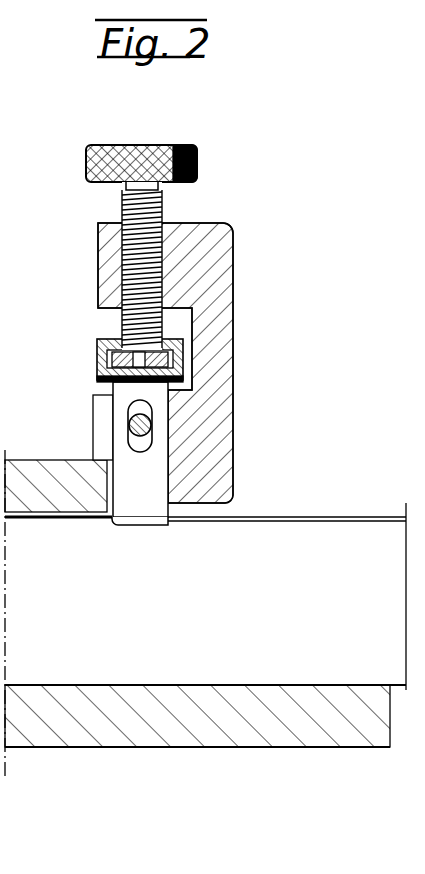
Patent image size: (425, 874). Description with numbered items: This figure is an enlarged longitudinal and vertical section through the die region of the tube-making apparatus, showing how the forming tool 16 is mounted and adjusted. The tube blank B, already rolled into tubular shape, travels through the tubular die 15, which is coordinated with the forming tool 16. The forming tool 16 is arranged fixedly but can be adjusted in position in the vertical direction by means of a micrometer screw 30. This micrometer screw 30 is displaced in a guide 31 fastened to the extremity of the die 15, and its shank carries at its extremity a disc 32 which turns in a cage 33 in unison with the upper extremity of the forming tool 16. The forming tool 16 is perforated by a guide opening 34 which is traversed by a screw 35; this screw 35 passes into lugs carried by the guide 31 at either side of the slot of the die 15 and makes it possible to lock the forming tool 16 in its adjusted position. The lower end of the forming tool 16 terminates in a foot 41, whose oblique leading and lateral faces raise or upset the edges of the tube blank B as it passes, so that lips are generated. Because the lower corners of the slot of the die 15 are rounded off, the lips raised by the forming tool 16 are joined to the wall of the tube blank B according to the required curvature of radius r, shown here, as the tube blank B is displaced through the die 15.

The tubular die 15 is at (240, 722).
The forming tool 16 is at (160, 468).
The micrometer screw 30 is at (122, 210).
The guide 31 is at (210, 242).
The disc 32 is at (97, 360).
The cage 33 is at (97, 347).
The guide opening 34 is at (180, 404).
The screw 35 is at (130, 427).
The foot 41 is at (155, 522).
The tube blank B is at (307, 547).